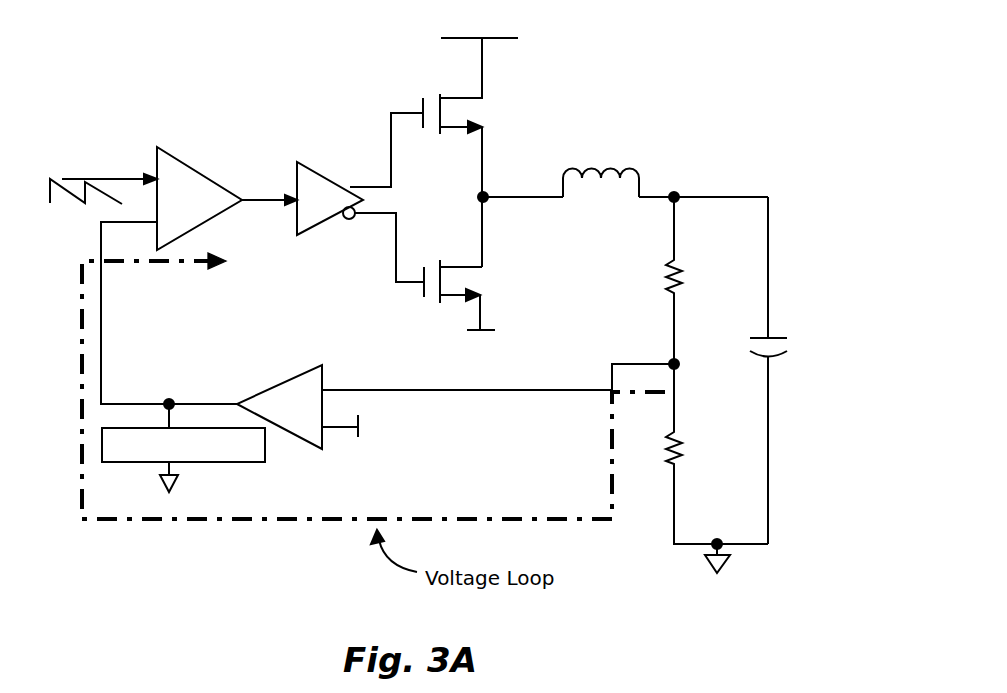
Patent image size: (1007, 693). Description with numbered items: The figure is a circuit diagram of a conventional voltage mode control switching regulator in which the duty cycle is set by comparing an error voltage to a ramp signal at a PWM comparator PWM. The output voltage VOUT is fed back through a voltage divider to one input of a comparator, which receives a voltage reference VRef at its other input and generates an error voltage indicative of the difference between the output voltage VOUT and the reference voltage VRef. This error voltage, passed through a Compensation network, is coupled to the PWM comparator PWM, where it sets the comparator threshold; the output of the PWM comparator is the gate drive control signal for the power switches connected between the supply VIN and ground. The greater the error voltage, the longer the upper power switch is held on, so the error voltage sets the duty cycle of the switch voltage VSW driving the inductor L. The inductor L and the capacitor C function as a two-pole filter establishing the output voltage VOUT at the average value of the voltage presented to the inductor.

The PWM comparator PWM is at (199, 198).
The input voltage supply VIN is at (479, 24).
The switch node voltage VSW is at (520, 184).
The inductor L is at (601, 170).
The output voltage VOUT is at (703, 185).
The capacitor C is at (770, 370).
The voltage reference VRef is at (366, 427).
The compensation network Compensation is at (183, 445).